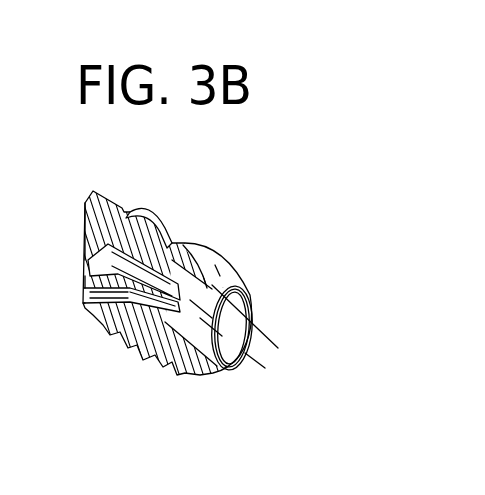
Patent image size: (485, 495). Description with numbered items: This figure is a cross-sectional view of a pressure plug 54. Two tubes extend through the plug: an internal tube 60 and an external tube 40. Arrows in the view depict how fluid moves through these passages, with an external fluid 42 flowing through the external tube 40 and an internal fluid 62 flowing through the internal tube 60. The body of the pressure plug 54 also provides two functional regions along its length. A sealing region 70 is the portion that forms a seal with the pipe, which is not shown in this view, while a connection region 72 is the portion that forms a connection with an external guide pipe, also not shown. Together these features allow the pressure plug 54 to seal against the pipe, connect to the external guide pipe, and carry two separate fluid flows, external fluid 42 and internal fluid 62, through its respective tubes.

The pressure plug 54 is at (240, 197).
The connection region 72 is at (178, 205).
The sealing region 70 is at (207, 237).
The internal tube 60 is at (247, 333).
The external tube 40 is at (250, 357).
The internal fluid 62 is at (95, 263).
The external fluid 42 is at (135, 296).